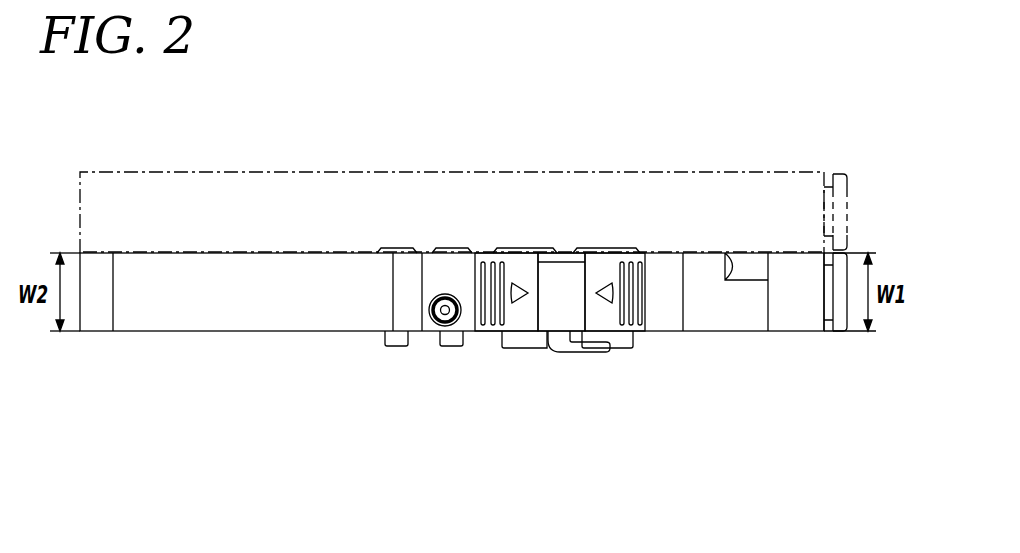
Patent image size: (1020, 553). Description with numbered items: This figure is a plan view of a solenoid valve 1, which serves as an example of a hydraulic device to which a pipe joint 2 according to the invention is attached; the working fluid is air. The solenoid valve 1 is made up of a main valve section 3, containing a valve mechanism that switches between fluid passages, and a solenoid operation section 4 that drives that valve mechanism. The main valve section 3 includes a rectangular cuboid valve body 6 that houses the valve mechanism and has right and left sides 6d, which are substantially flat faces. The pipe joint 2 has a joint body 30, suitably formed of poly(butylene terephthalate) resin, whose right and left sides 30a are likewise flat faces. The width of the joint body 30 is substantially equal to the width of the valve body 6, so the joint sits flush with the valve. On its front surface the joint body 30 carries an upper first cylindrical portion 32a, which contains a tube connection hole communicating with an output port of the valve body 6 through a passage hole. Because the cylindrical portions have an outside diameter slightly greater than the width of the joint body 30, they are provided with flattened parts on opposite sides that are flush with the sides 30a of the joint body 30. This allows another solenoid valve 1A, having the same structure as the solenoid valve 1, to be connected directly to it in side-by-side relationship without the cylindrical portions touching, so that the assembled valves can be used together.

The solenoid valve 1 is at (292, 378).
The another solenoid valve 1A is at (295, 172).
The pipe joint 2 is at (780, 340).
The main valve section 3 is at (530, 355).
The solenoid operation section 4 is at (170, 343).
The valve body 6 is at (523, 242).
The right and left sides 6d is at (483, 252).
The joint body 30 is at (733, 310).
The right and left sides 30a is at (710, 252).
The first cylindrical portion 32a is at (802, 332).